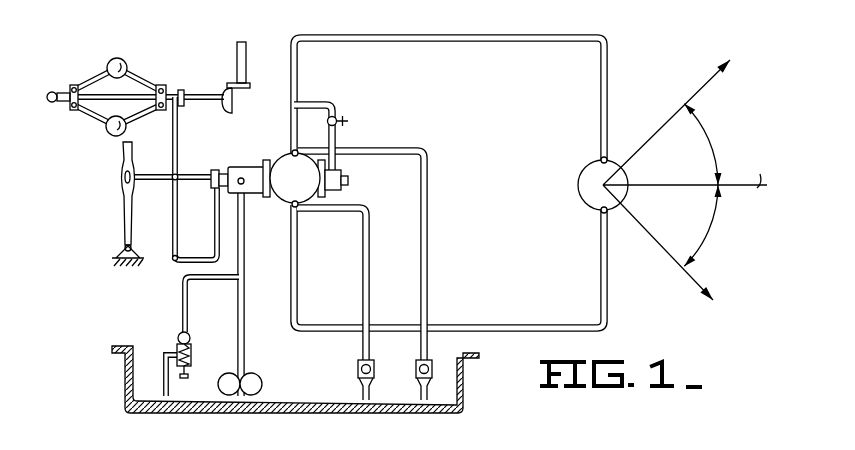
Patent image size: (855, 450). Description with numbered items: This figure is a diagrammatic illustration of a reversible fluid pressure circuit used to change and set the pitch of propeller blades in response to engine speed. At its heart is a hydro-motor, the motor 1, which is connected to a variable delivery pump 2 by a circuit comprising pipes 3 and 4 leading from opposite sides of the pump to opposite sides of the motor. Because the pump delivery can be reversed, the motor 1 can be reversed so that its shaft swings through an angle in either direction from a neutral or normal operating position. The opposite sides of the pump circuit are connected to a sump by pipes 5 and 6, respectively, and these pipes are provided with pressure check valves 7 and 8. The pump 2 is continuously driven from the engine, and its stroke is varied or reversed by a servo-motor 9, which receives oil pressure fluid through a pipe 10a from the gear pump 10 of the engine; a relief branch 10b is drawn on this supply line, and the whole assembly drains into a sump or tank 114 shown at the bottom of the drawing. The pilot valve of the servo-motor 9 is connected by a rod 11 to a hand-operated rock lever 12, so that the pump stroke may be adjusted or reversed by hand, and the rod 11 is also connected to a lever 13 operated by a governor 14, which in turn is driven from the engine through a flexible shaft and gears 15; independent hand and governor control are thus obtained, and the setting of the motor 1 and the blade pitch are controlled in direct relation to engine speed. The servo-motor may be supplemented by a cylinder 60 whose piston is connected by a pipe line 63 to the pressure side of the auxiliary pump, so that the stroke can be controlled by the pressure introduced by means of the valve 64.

The motor 1 is at (590, 208).
The variable delivery pump 2 is at (294, 178).
The pipe 3 is at (447, 36).
The pipe 4 is at (508, 325).
The pipe 5 is at (372, 278).
The pipe 6 is at (430, 284).
The pressure check valve 7 is at (368, 402).
The pressure check valve 8 is at (428, 402).
The servo-motor 9 is at (256, 150).
The gear pump 10 is at (258, 396).
The pipe 10a is at (245, 248).
The relief valve 10b is at (178, 338).
The rod 11 is at (193, 184).
The hand-operated rock lever 12 is at (122, 152).
The lever 13 is at (180, 135).
The governor 14 is at (140, 80).
The flexible shaft and gears 15 is at (233, 108).
The cylinder 60 is at (342, 186).
The pipe line 63 is at (342, 166).
The valve 64 is at (336, 137).
The oil tank 114 is at (125, 378).